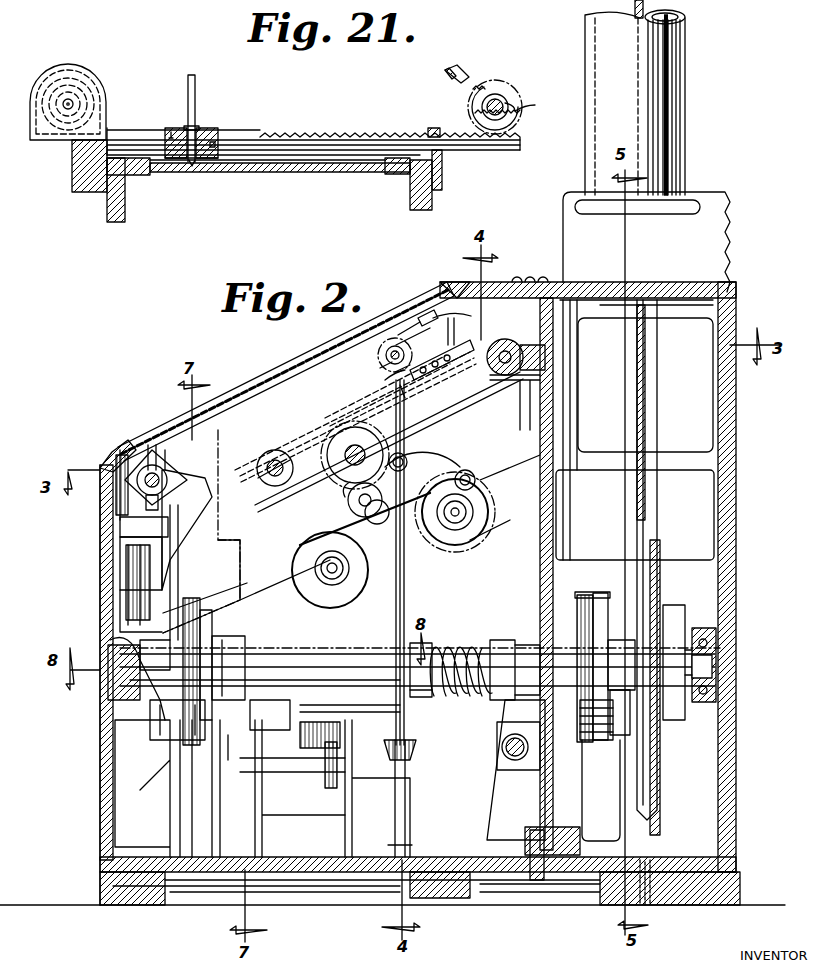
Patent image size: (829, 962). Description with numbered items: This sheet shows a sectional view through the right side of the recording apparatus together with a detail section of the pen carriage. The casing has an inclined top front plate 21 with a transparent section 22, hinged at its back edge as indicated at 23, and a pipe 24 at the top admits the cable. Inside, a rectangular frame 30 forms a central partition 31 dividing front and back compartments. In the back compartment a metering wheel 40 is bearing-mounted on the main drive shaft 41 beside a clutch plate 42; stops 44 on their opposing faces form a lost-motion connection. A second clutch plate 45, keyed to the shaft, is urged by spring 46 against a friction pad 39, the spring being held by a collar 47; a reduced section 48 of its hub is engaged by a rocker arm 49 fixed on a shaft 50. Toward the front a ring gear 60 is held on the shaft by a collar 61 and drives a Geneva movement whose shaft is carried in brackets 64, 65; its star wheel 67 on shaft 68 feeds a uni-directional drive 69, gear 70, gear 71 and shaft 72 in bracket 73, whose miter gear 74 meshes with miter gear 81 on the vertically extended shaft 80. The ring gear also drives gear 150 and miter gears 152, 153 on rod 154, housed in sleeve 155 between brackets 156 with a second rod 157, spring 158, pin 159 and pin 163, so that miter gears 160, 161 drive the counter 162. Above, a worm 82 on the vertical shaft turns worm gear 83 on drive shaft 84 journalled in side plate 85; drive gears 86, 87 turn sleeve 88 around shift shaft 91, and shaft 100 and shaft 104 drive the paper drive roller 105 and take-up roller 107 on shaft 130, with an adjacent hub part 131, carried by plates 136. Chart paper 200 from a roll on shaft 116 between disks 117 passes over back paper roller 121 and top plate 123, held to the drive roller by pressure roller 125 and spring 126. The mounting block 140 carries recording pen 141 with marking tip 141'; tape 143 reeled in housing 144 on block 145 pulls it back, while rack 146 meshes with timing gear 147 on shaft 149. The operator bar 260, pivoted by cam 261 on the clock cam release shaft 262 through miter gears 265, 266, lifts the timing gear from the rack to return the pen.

In FIG. 2, the inclined top front plate 21 is at (235, 390).
In FIG. 2, the transparent section 22 is at (283, 372).
In FIG. 2, the hinge 23 is at (535, 278).
In FIG. 2, the pipe 24 is at (685, 103).
In FIG. 2, the rectangular frame 30 is at (736, 400).
In FIG. 2, the central partition 31 is at (560, 412).
In FIG. 2, the friction pad 39 is at (588, 592).
In FIG. 2, the metering wheel 40 is at (660, 560).
In FIG. 2, the main drive shaft 41 is at (335, 656).
In FIG. 2, the clutch plate 42 is at (605, 600).
In FIG. 2, the stops 44 is at (613, 742).
In FIG. 2, the second clutch plate 45 is at (578, 596).
In FIG. 2, the spring 46 is at (472, 645).
In FIG. 2, the collar 47 is at (432, 645).
In FIG. 2, the reduced section 48 is at (510, 640).
In FIG. 2, the rocker arm 49 is at (503, 722).
In FIG. 2, the shaft 50 is at (517, 762).
In FIG. 2, the ring gear 60 is at (200, 615).
In FIG. 2, the collar 61 is at (226, 655).
In FIG. 2, the bracket 64 is at (178, 792).
In FIG. 2, the bracket 65 is at (262, 806).
In FIG. 2, the star wheel 67 is at (216, 760).
In FIG. 2, the shaft 68 is at (270, 724).
In FIG. 2, the uni-directional drive 69 is at (312, 748).
In FIG. 2, the gear 70 is at (340, 708).
In FIG. 2, the gear 71 is at (330, 790).
In FIG. 2, the shaft 72 is at (292, 774).
In FIG. 2, the bracket 73 is at (345, 834).
In FIG. 2, the miter gear 74 is at (392, 780).
In FIG. 2, the vertically extended shaft 80 is at (405, 606).
In FIG. 2, the miter gear 81 is at (412, 752).
In FIG. 2, the worm 82 is at (422, 461).
In FIG. 2, the worm gear 83 is at (348, 500).
In FIG. 2, the drive shaft 84 is at (365, 519).
In FIG. 21, the side plate 85 is at (126, 210).
In FIG. 2, the side plate 85 is at (258, 505).
In FIG. 2, the drive gear 86 is at (357, 503).
In FIG. 2, the drive gear 87 is at (326, 488).
In FIG. 2, the sleeve 88 is at (355, 455).
In FIG. 2, the shift shaft 91 is at (346, 455).
In FIG. 2, the shaft 100 is at (406, 458).
In FIG. 2, the shaft 104 is at (462, 470).
In FIG. 2, the paper drive roller 105 is at (500, 354).
In FIG. 2, the paper take-up roller 107 is at (472, 535).
In FIG. 2, the shaft 116 is at (312, 600).
In FIG. 2, the disks 117 is at (348, 602).
In FIG. 2, the back paper roller 121 is at (263, 462).
In FIG. 21, the top plate 123 is at (306, 172).
In FIG. 2, the top plate 123 is at (355, 417).
In FIG. 2, the pressure roller 125 is at (520, 352).
In FIG. 2, the spring 126 is at (515, 402).
In FIG. 2, the shaft 130 is at (455, 548).
In FIG. 2, the hub 131 is at (440, 530).
In FIG. 2, the plates 136 is at (490, 492).
In FIG. 21, the mounting block 140 is at (212, 128).
In FIG. 2, the mounting block 140 is at (442, 360).
In FIG. 21, the recording pen 141 is at (206, 116).
In FIG. 2, the recording pen 141 is at (464, 330).
In FIG. 21, the marking tip 141' is at (202, 180).
In FIG. 21, the tape 143 is at (135, 130).
In FIG. 21, the housing 144 is at (72, 68).
In FIG. 2, the housing 144 is at (444, 314).
In FIG. 21, the block 145 is at (72, 163).
In FIG. 21, the rack 146 is at (278, 139).
In FIG. 2, the rack 146 is at (420, 380).
In FIG. 21, the timing gear 147 is at (500, 90).
In FIG. 21, the shaft 149 is at (520, 107).
In FIG. 2, the gear 150 is at (192, 652).
In FIG. 2, the miter gear 152 is at (174, 720).
In FIG. 2, the miter gear 153 is at (108, 655).
In FIG. 2, the rod 154 is at (170, 586).
In FIG. 2, the sleeve 155 is at (201, 531).
In FIG. 2, the brackets 156 is at (105, 630).
In FIG. 2, the second rod 157 is at (172, 436).
In FIG. 2, the spring 158 is at (134, 582).
In FIG. 2, the pin 159 is at (120, 550).
In FIG. 2, the miter gear 160 is at (120, 520).
In FIG. 2, the miter gear 161 is at (137, 445).
In FIG. 2, the counter 162 is at (100, 458).
In FIG. 2, the pin 163 is at (170, 612).
In FIG. 21, the chart paper 200 is at (270, 172).
In FIG. 2, the chart paper 200 is at (296, 590).
In FIG. 21, the operator bar 260 is at (458, 72).
In FIG. 2, the cam 261 is at (378, 370).
In FIG. 2, the clock cam release shaft 262 is at (402, 326).
In FIG. 2, the miter gear 265 is at (380, 350).
In FIG. 2, the miter gear 266 is at (376, 384).